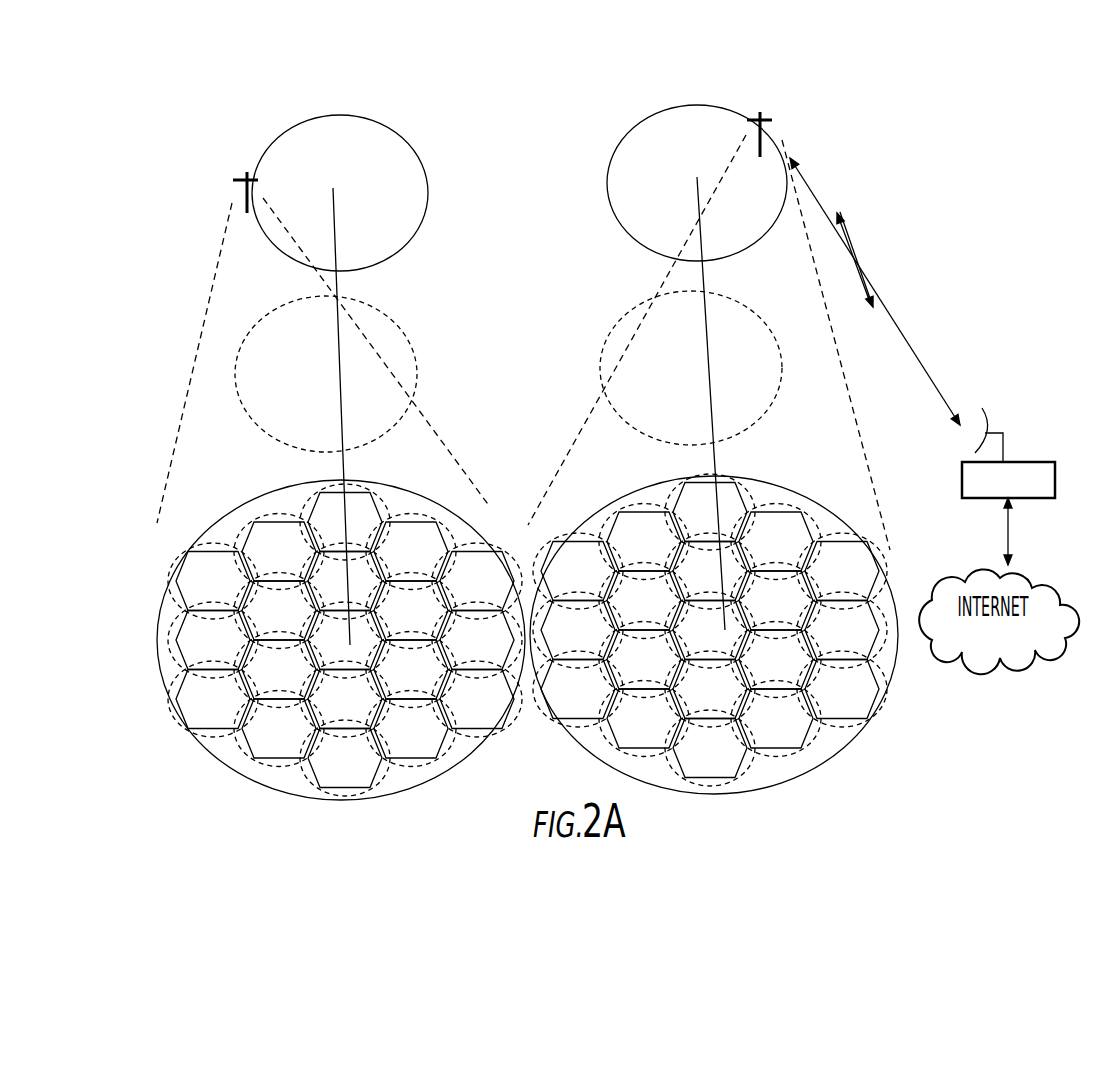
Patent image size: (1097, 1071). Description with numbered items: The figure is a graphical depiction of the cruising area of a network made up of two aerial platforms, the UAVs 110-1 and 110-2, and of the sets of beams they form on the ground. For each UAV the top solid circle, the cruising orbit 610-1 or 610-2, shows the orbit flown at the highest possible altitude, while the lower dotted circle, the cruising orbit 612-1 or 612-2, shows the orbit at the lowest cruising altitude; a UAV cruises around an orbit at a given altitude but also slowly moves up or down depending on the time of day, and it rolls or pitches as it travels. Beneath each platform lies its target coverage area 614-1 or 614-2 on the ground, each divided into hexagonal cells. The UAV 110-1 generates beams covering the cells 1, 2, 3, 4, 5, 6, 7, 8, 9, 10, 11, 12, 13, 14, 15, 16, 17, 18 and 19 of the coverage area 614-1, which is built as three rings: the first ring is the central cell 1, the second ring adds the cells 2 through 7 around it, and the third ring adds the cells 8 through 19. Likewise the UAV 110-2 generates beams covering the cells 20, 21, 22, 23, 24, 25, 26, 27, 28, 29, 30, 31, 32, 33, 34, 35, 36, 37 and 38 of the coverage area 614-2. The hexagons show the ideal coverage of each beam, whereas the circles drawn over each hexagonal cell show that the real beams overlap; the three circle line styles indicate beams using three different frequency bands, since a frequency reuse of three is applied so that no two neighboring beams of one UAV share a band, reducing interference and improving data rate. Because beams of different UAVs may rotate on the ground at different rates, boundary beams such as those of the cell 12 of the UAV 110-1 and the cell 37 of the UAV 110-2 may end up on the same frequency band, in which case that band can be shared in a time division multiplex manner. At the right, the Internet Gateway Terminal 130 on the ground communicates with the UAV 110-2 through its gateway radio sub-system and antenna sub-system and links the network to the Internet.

The cruising orbit 610-1 is at (273, 142).
The cruising orbit 610-2 is at (633, 127).
The UAV 110-1 is at (233, 180).
The UAV 110-2 is at (772, 120).
The cruising orbit 612-1 is at (287, 442).
The cruising orbit 612-2 is at (747, 432).
The coverage area 614-1 is at (168, 692).
The coverage area 614-2 is at (840, 748).
The Internet Gateway Terminal 130 is at (1032, 460).
The cell 1 is at (345, 640).
The cell 2 is at (345, 699).
The cell 3 is at (411, 670).
The cell 4 is at (411, 611).
The cell 5 is at (345, 581).
The cell 6 is at (279, 611).
The cell 7 is at (279, 670).
The cell 8 is at (279, 729).
The cell 9 is at (345, 758).
The cell 10 is at (411, 729).
The cell 11 is at (477, 699).
The cell 12 is at (477, 640).
The cell 13 is at (477, 581).
The cell 14 is at (411, 552).
The cell 15 is at (345, 522).
The cell 16 is at (279, 552).
The cell 17 is at (213, 581).
The cell 18 is at (213, 640).
The cell 19 is at (213, 699).
The cell 20 is at (710, 630).
The cell 21 is at (710, 689).
The cell 22 is at (776, 660).
The cell 23 is at (776, 601).
The cell 24 is at (710, 571).
The cell 25 is at (644, 601).
The cell 26 is at (644, 660).
The cell 27 is at (644, 719).
The cell 28 is at (710, 748).
The cell 29 is at (776, 719).
The cell 30 is at (842, 689).
The cell 31 is at (842, 630).
The cell 32 is at (842, 571).
The cell 33 is at (776, 542).
The cell 34 is at (710, 512).
The cell 35 is at (644, 542).
The cell 36 is at (578, 571).
The cell 37 is at (578, 630).
The cell 38 is at (578, 689).